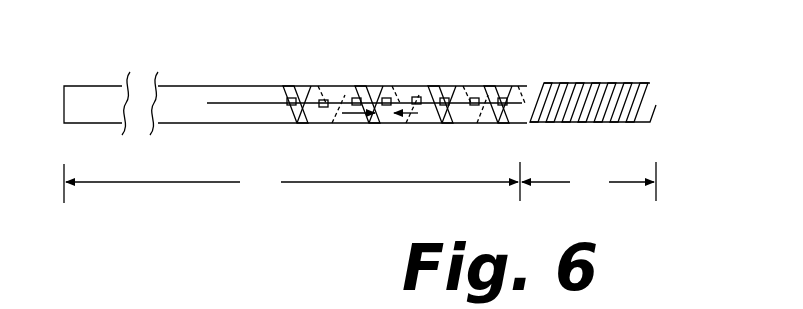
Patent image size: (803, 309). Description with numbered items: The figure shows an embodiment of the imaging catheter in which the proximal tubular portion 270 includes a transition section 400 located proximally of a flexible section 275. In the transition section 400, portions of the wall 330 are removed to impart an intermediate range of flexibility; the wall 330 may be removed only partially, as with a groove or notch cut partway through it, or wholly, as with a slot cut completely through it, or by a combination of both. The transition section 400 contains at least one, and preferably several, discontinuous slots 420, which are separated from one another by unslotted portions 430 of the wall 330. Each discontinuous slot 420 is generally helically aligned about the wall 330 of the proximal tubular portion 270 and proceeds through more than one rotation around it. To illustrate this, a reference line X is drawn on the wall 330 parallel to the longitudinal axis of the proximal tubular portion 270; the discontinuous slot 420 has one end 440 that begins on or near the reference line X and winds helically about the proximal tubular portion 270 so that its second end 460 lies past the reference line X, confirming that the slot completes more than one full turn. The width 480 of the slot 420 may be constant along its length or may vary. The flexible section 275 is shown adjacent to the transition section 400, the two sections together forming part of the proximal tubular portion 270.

The proximal tubular portion 270 is at (568, 46).
The wall 330 is at (500, 86).
The discontinuous slot 420 is at (441, 97).
The unslotted portion 430 is at (399, 98).
The end of discontinuous slot 440 is at (289, 96).
The second end of discontinuous slot 460 is at (324, 104).
The width of slot 480 is at (406, 114).
The transition section 400 is at (292, 182).
The flexible section 275 is at (589, 181).
The reference line X is at (215, 96).